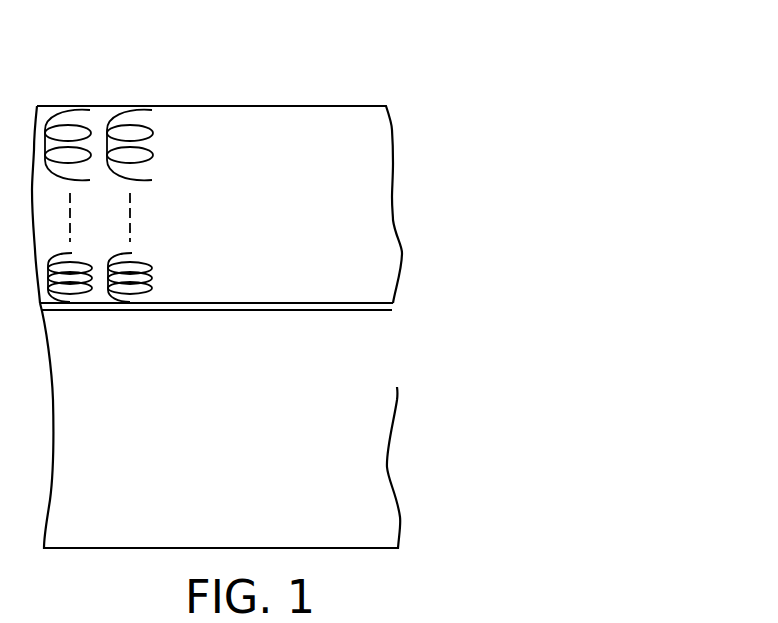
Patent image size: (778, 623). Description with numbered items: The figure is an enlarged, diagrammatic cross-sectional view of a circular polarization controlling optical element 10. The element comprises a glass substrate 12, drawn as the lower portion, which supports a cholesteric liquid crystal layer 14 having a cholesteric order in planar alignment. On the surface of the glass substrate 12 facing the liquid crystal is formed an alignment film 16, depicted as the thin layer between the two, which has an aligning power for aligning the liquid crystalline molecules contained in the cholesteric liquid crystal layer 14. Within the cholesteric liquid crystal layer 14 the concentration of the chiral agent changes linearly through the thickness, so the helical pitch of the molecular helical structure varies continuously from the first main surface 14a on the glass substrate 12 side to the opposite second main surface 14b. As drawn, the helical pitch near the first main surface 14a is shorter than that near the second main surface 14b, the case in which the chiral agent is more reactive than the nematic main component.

The circular polarization controlling optical element 10 is at (308, 77).
The glass substrate 12 is at (372, 430).
The cholesteric liquid crystal layer 14 is at (363, 199).
The first main surface 14a is at (308, 304).
The second main surface 14b is at (373, 106).
The alignment film 16 is at (390, 302).